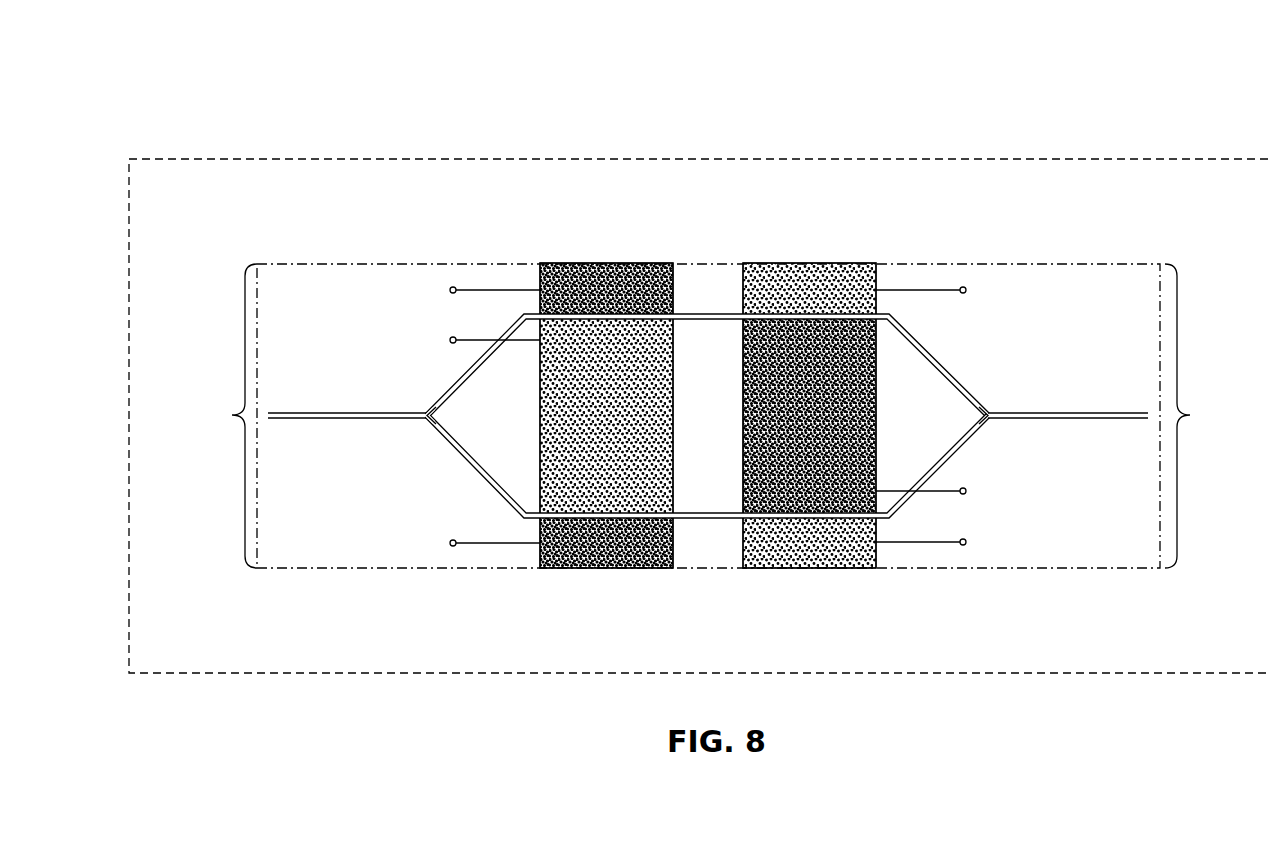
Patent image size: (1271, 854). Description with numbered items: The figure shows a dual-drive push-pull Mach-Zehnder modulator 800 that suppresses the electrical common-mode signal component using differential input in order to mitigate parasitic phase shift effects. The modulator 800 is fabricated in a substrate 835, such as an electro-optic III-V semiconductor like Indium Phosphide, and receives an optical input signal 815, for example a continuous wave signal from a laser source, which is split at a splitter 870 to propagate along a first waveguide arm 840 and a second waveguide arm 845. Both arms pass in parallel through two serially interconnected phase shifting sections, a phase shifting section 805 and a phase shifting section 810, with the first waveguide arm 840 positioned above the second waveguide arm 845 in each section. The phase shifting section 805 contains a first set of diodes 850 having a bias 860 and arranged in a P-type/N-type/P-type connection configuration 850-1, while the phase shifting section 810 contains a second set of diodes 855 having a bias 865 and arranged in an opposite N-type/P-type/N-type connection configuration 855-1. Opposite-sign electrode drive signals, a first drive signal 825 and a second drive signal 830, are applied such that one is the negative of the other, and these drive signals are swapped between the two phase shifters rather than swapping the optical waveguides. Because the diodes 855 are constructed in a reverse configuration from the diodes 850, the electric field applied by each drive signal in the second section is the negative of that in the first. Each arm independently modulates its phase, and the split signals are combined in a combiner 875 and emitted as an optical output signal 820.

The dual-drive push-pull Mach-Zehnder modulator 800 is at (178, 58).
The phase shifting section 805 is at (615, 381).
The phase shifting section 810 is at (820, 381).
The optical input signal 815 is at (318, 420).
The optical output signal 820 is at (1103, 422).
The first drive signal 825 is at (456, 287).
The second drive signal 830 is at (966, 286).
The substrate 835 is at (203, 158).
The first waveguide arm 840 is at (706, 312).
The second waveguide arm 845 is at (702, 521).
The first set of diodes 850 is at (645, 272).
The second set of diodes 855 is at (852, 277).
The PNP connection configuration 850-1 is at (206, 416).
The NPN connection configuration 855-1 is at (1216, 416).
The bias 860 is at (452, 348).
The bias 865 is at (966, 486).
The splitter 870 is at (421, 424).
The combiner 875 is at (991, 408).